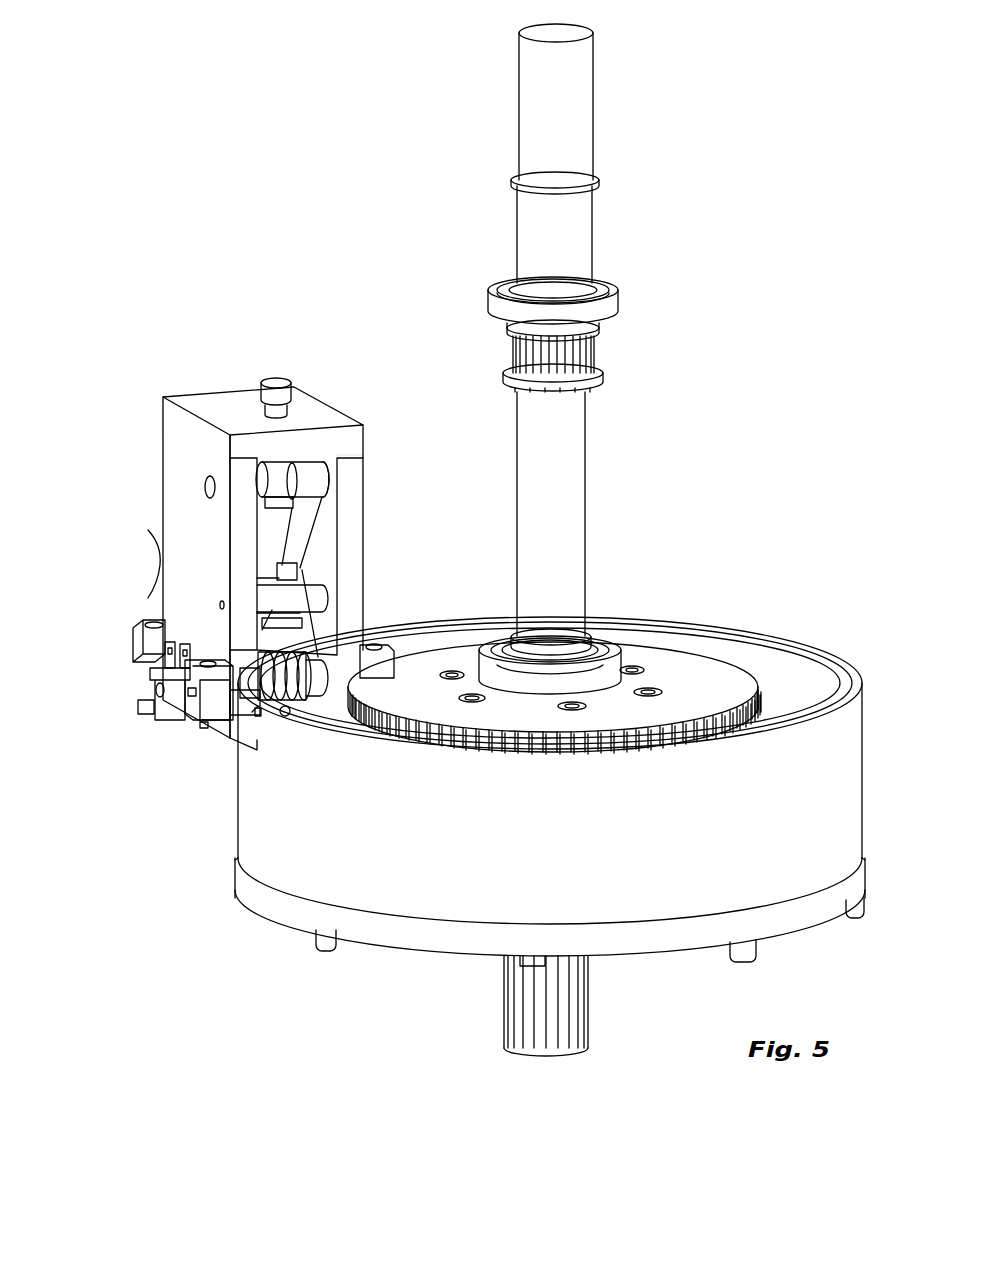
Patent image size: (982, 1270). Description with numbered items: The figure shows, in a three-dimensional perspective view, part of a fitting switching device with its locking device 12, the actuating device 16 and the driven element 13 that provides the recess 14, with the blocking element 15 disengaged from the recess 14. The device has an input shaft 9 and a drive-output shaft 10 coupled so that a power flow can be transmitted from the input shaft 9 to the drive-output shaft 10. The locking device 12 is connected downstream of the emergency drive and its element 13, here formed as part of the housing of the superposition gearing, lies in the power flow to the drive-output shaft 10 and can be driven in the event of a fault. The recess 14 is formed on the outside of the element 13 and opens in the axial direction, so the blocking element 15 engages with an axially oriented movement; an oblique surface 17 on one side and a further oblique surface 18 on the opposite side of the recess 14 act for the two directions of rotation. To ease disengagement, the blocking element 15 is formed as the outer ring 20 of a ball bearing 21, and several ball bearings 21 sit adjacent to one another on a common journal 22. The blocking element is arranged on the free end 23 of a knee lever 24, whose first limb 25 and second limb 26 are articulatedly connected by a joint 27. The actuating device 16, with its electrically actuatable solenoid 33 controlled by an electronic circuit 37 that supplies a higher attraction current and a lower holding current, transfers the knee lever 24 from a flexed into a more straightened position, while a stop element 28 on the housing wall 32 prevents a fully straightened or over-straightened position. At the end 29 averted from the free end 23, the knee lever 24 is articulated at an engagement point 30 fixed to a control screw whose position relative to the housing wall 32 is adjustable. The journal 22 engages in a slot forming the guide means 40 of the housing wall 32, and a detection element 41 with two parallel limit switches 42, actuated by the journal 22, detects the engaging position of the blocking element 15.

The input shaft 9 is at (572, 99).
The drive-output shaft 10 is at (507, 1028).
The locking device 12 is at (312, 272).
The element 13 is at (333, 860).
The recess 14 is at (205, 727).
The blocking element 15 is at (210, 721).
The actuating device 16 is at (188, 352).
The pin 17 is at (257, 713).
The further oblique surface 18 is at (270, 708).
The outer ring 20 is at (275, 640).
The ball bearing 21 is at (318, 705).
The journal 22 is at (192, 690).
The free end 23 is at (307, 663).
The knee lever 24 is at (311, 564).
The first limb 25 is at (302, 628).
The second limb 26 is at (300, 526).
The joint 27 is at (288, 564).
The stop element 28 is at (290, 590).
The end 29 is at (333, 472).
The engagement point 30 is at (292, 485).
The housing wall 32 is at (172, 438).
The solenoid 33 is at (153, 552).
The electronic circuit 37 is at (288, 392).
The guide means 40 is at (200, 730).
The detection element 41 is at (120, 681).
The limit switches 42 is at (148, 680).